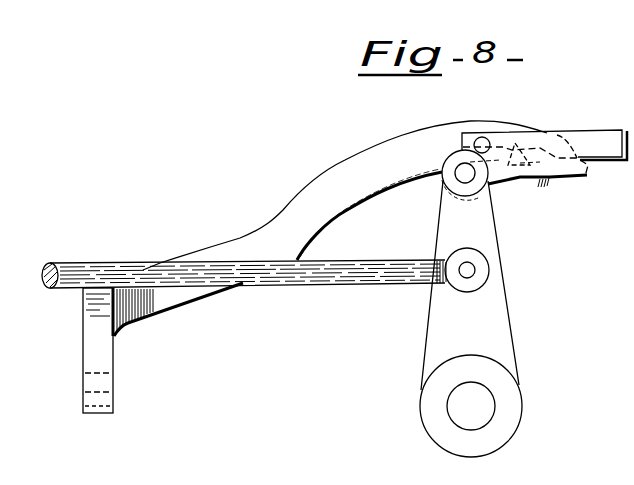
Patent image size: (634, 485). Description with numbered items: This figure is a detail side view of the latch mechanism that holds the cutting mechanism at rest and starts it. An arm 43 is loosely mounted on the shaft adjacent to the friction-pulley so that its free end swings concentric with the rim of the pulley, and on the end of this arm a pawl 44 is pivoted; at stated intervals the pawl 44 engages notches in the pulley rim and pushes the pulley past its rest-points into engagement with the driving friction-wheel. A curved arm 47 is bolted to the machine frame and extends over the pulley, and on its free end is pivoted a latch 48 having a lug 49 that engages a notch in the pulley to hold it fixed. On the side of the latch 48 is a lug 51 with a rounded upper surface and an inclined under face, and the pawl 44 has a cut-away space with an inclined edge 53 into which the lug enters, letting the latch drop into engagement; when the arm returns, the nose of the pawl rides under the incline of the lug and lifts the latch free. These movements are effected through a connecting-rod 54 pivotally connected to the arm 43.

The arm 43 is at (471, 319).
The pawl 44 is at (570, 178).
The arm 47 is at (345, 195).
The latch 48 is at (544, 145).
The lug 49 is at (526, 150).
The lug 51 is at (518, 148).
The inclined edge 53 is at (552, 182).
The connecting-rod 54 is at (360, 283).